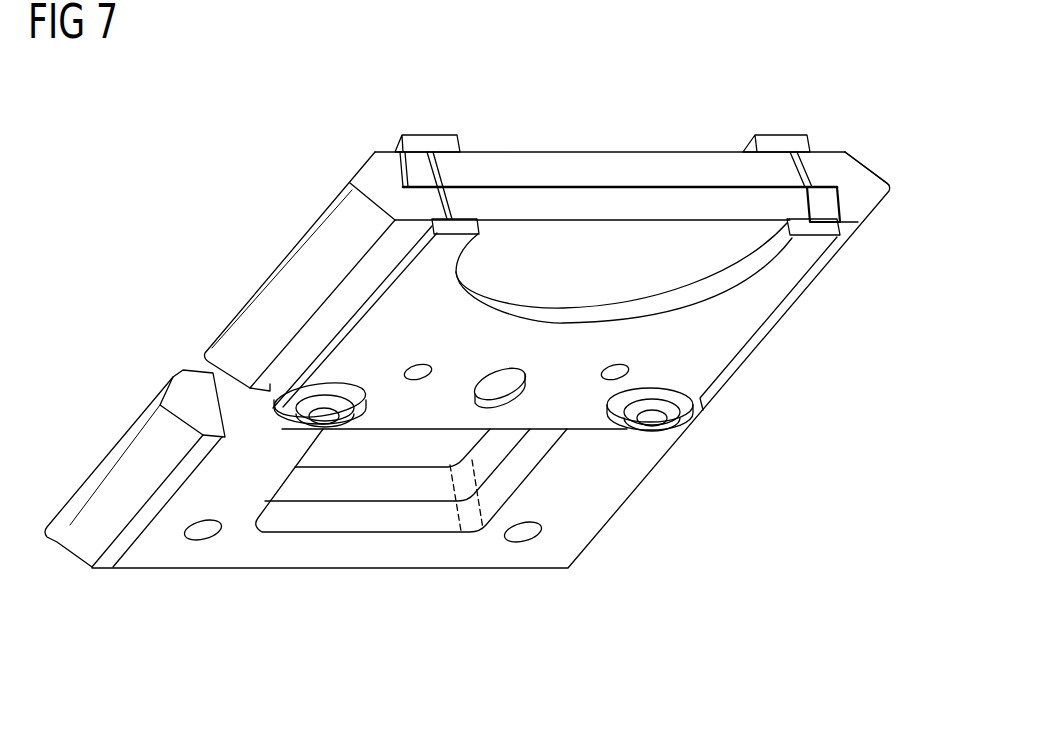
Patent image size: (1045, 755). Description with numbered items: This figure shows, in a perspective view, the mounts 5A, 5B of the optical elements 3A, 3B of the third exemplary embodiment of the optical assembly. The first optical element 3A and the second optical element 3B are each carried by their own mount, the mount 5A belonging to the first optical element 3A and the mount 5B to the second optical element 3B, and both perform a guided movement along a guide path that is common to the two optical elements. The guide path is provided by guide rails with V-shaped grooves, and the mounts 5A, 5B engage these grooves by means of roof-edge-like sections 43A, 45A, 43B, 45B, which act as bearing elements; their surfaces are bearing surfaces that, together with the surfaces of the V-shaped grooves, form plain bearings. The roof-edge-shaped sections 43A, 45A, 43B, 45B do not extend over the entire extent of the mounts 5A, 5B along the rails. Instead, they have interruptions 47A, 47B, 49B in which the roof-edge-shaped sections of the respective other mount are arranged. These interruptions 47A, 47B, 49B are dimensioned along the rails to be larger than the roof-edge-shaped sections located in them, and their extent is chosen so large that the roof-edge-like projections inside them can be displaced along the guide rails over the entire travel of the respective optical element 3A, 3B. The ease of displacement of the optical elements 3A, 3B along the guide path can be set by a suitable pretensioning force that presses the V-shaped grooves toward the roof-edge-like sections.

The first optical element 3A is at (530, 170).
The second optical element 3B is at (615, 208).
The roof-edge-like section 45A is at (833, 170).
The interruption 49B is at (848, 206).
The roof-edge-like section 43B is at (281, 293).
The interruption 47A is at (208, 375).
The roof-edge-like section 43A is at (125, 472).
The interruption 47B is at (221, 427).
The mount 5A is at (387, 487).
The roof-edge-like section 45B is at (658, 443).
The mount 5B is at (600, 507).